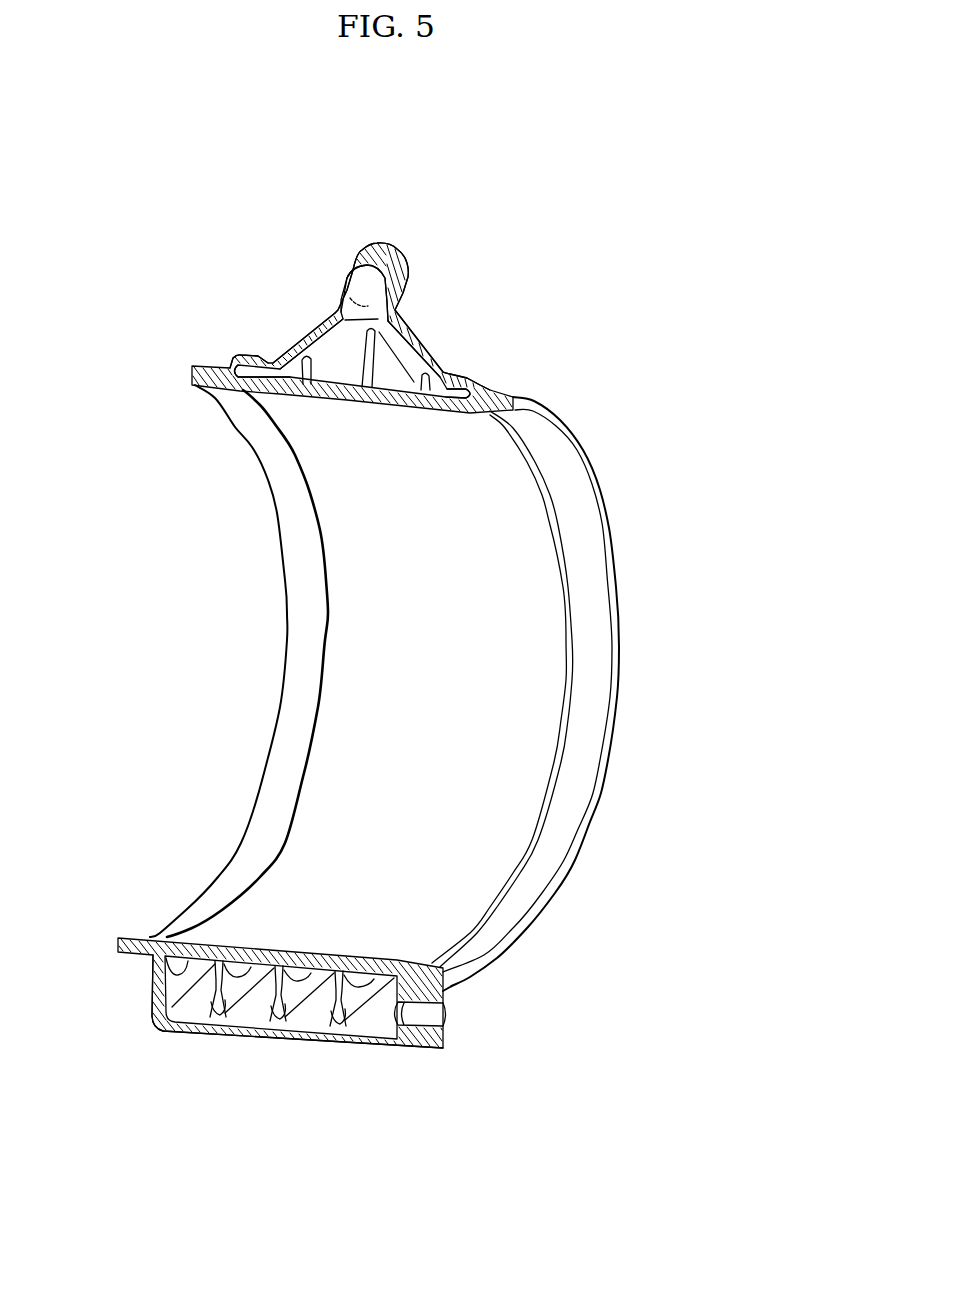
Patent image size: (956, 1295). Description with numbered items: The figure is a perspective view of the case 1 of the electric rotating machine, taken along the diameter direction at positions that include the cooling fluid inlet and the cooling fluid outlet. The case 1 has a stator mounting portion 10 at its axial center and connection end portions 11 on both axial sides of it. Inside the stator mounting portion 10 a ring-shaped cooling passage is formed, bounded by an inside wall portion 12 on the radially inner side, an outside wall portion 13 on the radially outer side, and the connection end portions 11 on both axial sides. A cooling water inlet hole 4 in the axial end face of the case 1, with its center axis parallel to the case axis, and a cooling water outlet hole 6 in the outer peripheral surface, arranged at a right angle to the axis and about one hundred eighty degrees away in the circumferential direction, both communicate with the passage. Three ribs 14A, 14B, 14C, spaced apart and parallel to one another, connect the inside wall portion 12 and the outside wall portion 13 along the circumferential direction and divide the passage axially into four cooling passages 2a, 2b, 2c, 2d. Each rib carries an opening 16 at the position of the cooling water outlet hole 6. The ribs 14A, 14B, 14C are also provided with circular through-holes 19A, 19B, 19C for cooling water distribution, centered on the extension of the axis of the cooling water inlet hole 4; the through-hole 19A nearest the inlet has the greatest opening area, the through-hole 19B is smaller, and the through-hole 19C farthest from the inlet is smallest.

The case 1 is at (620, 645).
The cooling passage 2a is at (353, 975).
The cooling passage 2b is at (293, 960).
The cooling passage 2c is at (235, 953).
The cooling passage 2d is at (167, 957).
The cooling water inlet hole 4 is at (431, 1018).
The cooling water outlet hole 6 is at (387, 240).
The stator mounting portion 10 is at (165, 1038).
The connection end portion 11 is at (410, 1050).
The inside wall portion 12 is at (533, 757).
The outside wall portion 13 is at (340, 1032).
The rib 14A is at (357, 1004).
The rib 14B is at (295, 1000).
The rib 14C is at (233, 1018).
The opening 16 is at (310, 343).
The through-hole 19A is at (327, 1009).
The through-hole 19B is at (273, 1005).
The through-hole 19C is at (210, 1004).